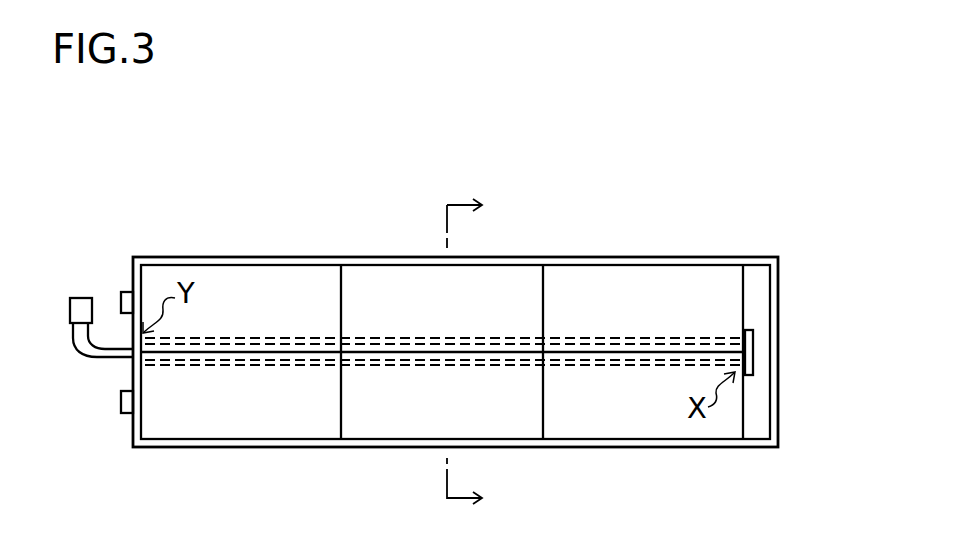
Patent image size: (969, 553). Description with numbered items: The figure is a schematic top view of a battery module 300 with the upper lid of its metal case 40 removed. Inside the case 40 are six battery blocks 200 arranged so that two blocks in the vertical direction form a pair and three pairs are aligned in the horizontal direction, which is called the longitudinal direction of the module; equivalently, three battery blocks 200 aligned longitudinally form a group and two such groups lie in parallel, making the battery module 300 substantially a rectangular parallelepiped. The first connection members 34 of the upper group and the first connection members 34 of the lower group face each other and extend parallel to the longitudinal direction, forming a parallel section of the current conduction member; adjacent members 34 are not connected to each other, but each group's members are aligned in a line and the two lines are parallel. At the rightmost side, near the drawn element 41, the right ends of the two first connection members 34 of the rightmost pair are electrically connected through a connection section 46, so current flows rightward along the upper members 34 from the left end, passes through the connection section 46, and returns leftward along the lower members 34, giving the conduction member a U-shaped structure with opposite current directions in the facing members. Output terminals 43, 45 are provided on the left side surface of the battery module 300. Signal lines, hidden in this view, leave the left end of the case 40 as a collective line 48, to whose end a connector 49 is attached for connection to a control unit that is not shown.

The battery module 300 is at (562, 196).
The case 40 is at (612, 448).
The partition wall 41 is at (754, 281).
The connection section 46 is at (754, 340).
The first connection member 34 is at (597, 337).
The output terminal 43 is at (121, 300).
The output terminal 45 is at (118, 406).
The connector 49 is at (82, 306).
The collective line 48 is at (97, 362).
The battery block 200 is at (238, 315).